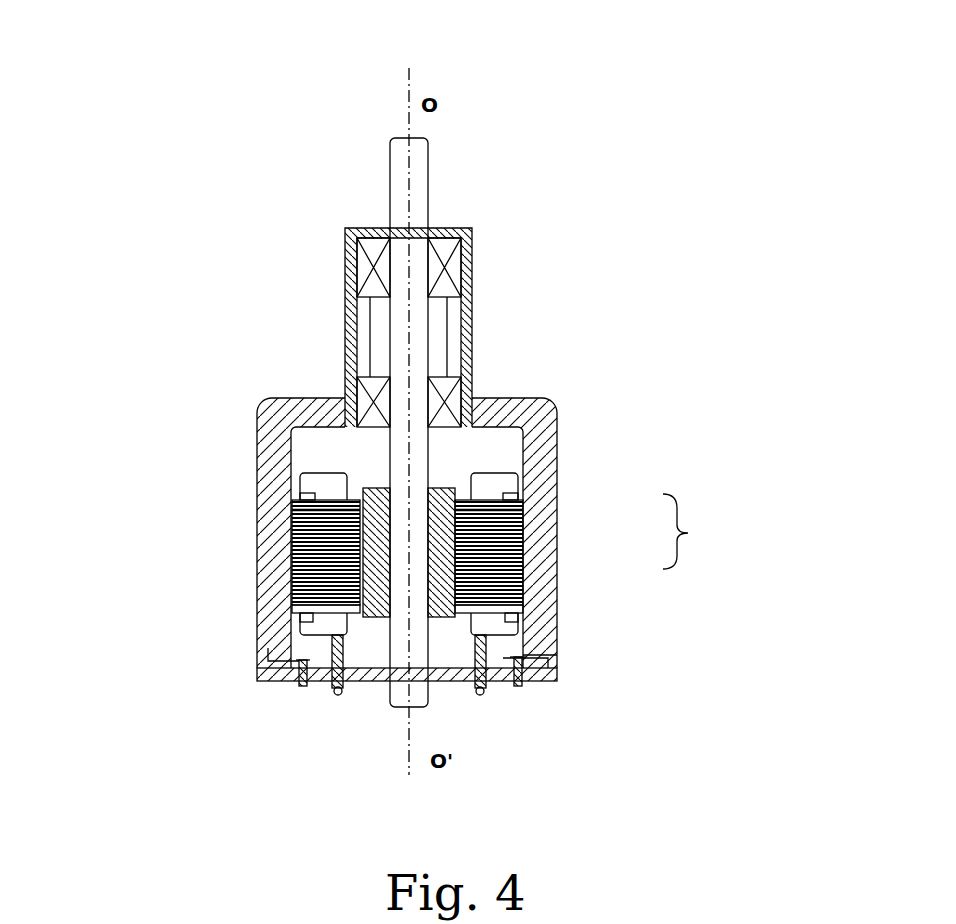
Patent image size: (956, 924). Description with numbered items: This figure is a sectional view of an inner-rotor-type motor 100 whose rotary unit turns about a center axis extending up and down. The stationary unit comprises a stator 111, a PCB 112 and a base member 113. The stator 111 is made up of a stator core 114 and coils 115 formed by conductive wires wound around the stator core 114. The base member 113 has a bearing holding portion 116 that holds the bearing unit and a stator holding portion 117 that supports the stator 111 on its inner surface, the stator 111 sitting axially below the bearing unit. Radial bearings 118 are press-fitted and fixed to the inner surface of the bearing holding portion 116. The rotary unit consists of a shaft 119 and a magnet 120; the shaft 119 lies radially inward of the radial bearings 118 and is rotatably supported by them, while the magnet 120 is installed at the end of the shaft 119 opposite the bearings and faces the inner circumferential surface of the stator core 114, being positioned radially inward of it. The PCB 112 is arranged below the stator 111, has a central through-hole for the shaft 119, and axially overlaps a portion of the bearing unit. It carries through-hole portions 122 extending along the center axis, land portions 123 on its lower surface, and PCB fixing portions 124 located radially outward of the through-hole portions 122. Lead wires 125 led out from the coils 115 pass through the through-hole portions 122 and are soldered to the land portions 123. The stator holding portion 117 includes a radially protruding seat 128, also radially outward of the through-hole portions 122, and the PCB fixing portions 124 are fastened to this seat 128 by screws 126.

The motor 100 is at (414, 42).
The stator 111 is at (701, 531).
The PCB 112 is at (277, 672).
The base member 113 is at (277, 482).
The stator core 114 is at (540, 525).
The coils 115 is at (497, 627).
The bearing holding portion 116 is at (470, 265).
The stator holding portion 117 is at (548, 626).
The radial bearings 118 is at (360, 402).
The shaft 119 is at (420, 190).
The magnet 120 is at (447, 490).
The through-hole portions 122 is at (485, 694).
The land portions 123 is at (342, 696).
The PCB fixing portions 124 is at (545, 672).
The lead wires 125 is at (337, 655).
The screws 126 is at (528, 688).
The seat 128 is at (300, 667).